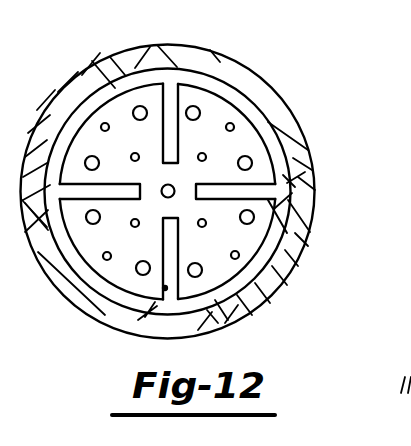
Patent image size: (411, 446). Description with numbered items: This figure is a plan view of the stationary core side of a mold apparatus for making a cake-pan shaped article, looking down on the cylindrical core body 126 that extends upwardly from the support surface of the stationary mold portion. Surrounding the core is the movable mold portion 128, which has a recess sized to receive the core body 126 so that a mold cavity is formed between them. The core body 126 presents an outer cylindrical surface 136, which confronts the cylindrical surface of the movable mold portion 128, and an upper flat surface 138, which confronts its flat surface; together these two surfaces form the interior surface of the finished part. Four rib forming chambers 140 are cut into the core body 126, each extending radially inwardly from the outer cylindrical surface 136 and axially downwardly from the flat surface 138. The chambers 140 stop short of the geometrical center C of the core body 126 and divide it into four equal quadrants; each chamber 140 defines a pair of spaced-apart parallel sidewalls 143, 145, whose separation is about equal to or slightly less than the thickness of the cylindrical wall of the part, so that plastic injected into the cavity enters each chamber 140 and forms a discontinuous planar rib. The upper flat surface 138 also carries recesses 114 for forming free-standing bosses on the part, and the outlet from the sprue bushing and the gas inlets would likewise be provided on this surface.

The recesses 114 is at (169, 88).
The cylindrical core body 126 is at (273, 159).
The movable mold portion 128 is at (285, 101).
The outer cylindrical surface 136 is at (139, 105).
The upper flat surface 138 is at (110, 111).
The rib forming chambers 140 is at (180, 85).
The sidewall 143 is at (290, 205).
The sidewall 145 is at (296, 229).
The geometrical center C is at (175, 188).